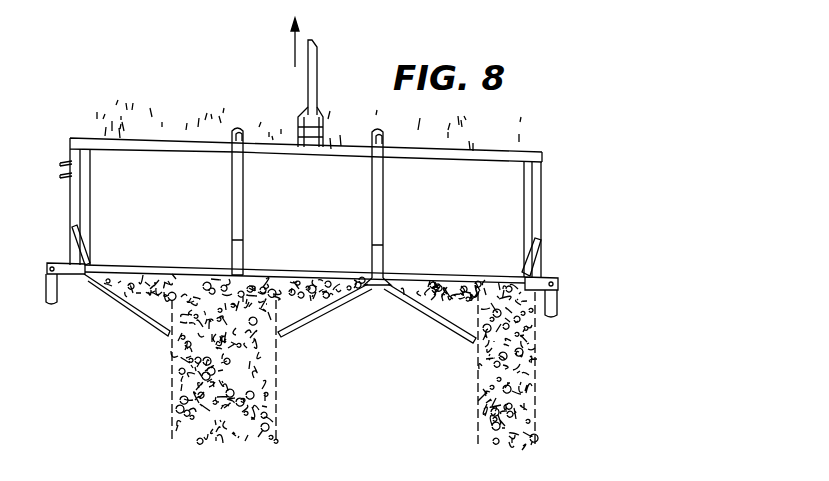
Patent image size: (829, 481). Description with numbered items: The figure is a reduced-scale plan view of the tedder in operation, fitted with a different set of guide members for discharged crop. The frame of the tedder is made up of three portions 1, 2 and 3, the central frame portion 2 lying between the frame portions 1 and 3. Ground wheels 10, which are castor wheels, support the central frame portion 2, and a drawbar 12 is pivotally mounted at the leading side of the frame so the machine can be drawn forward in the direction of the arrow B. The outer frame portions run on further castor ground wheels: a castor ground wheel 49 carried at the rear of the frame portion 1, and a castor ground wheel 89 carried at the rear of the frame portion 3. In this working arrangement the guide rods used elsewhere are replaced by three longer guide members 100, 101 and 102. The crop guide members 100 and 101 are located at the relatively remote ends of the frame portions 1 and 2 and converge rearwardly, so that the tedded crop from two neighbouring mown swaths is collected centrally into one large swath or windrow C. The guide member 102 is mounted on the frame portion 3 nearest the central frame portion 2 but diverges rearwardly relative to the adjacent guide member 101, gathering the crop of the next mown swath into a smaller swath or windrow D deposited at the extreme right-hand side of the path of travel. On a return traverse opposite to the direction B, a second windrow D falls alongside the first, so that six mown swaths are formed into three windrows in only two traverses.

The frame portion 1 is at (176, 143).
The central frame portion 2 is at (351, 142).
The frame portion 3 is at (487, 147).
The ground wheels 10 is at (238, 128).
The drawbar 12 is at (317, 70).
The castor ground wheel 49 is at (51, 305).
The castor ground wheel 89 is at (559, 312).
The crop guide member 100 is at (133, 311).
The crop guide member 101 is at (303, 323).
The guide member 102 is at (451, 326).
The direction of travel B is at (286, 46).
The swath or windrow C is at (177, 388).
The swath or windrow D is at (478, 398).